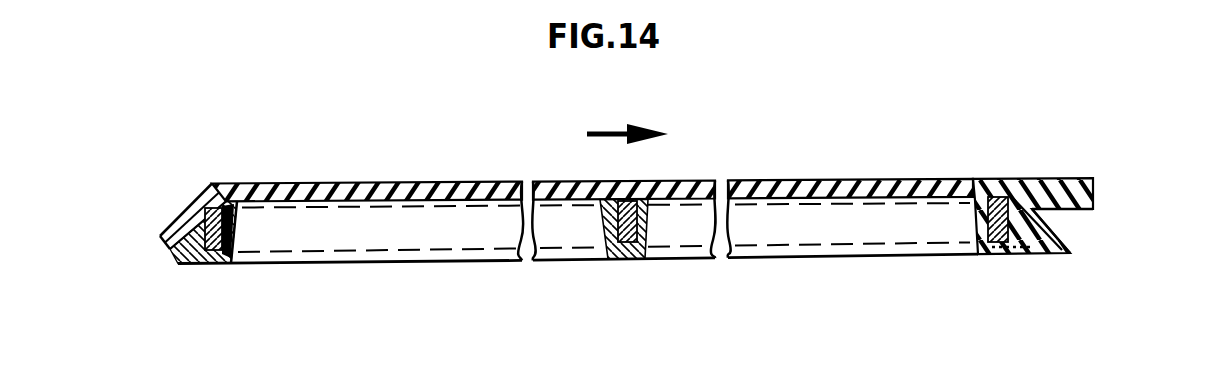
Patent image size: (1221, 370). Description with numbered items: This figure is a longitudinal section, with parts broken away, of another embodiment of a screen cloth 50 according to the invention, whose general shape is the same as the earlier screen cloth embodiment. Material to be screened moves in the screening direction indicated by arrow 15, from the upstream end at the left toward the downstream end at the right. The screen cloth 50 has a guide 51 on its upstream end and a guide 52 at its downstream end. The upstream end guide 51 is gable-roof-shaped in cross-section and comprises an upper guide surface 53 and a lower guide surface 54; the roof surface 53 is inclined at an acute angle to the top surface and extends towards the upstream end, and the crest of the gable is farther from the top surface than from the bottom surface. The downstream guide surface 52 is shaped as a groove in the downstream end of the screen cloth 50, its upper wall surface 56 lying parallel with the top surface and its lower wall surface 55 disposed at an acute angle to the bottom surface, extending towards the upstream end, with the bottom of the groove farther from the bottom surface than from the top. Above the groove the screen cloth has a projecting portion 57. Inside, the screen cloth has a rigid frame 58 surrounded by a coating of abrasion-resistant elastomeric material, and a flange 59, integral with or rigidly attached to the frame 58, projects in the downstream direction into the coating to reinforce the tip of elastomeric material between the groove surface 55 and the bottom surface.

The screening direction arrow 15 is at (627, 121).
The screen cloth 50 is at (307, 177).
The upstream end guide 51 is at (156, 223).
The downstream guide 52 is at (1088, 238).
The upper guide surface 53 is at (203, 206).
The lower guide surface 54 is at (170, 250).
The lower wall surface 55 is at (1070, 245).
The upper wall surface 56 is at (1076, 210).
The projecting portion 57 is at (1056, 178).
The rigid frame 58 is at (223, 264).
The flange 59 is at (1027, 258).